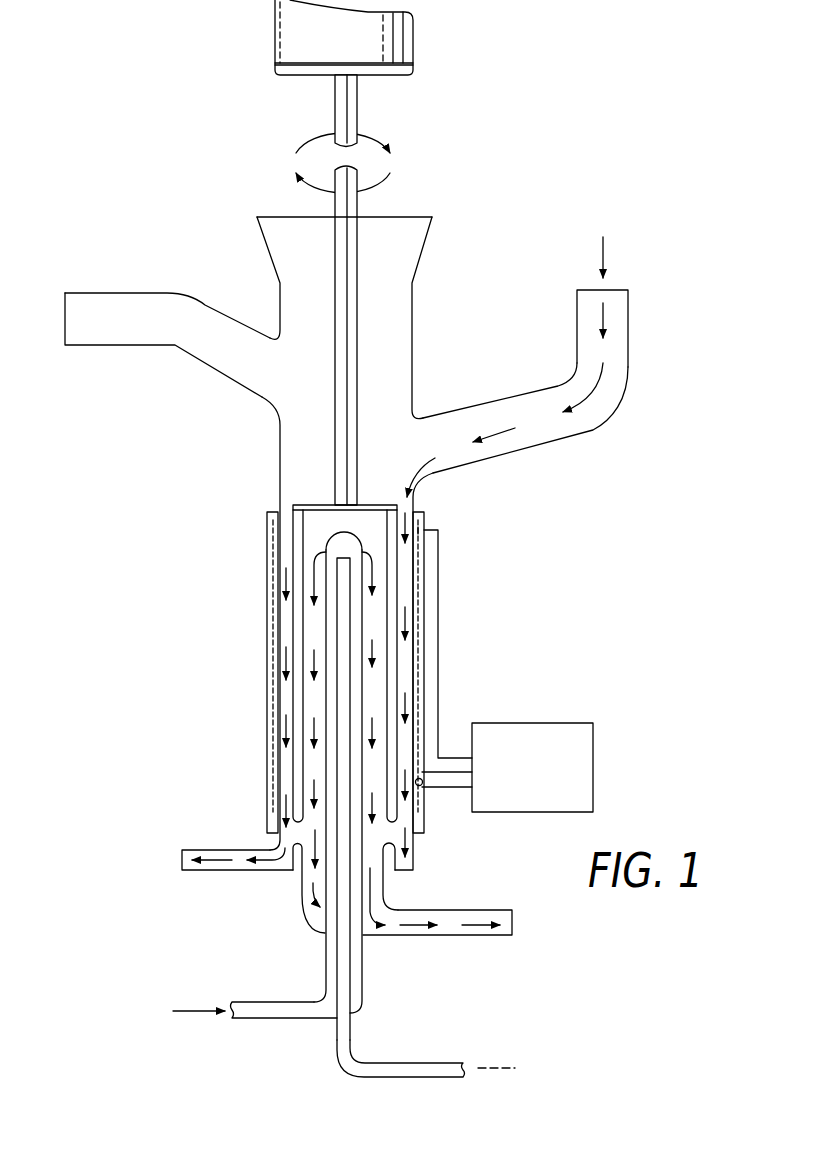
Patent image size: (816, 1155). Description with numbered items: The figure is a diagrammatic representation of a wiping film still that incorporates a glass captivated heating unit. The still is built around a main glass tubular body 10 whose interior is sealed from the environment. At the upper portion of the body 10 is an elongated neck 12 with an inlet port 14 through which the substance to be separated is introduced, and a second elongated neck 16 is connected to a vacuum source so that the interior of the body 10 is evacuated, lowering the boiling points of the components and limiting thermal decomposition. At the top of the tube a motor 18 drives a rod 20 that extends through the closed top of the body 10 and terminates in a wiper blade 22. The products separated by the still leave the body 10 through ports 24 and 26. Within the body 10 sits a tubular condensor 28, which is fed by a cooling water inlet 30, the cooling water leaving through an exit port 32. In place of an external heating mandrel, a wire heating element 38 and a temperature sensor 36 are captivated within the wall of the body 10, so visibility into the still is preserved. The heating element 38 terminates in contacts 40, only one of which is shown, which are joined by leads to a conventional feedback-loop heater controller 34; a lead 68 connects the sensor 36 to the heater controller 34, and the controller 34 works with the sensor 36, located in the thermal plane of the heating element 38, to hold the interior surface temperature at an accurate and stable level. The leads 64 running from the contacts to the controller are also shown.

The main glass tubular body 10 is at (278, 468).
The elongated neck 12 is at (613, 390).
The inlet port 14 is at (617, 288).
The elongated neck 16 is at (128, 304).
The motor 18 is at (413, 45).
The rod 20 is at (360, 290).
The wiper blade 22 is at (393, 588).
The port 24 is at (230, 814).
The port 26 is at (490, 890).
The tubular condensor 28 is at (325, 690).
The cooling water inlet 30 is at (270, 980).
The exit port 32 is at (455, 1037).
The heater controller 34 is at (575, 697).
The temperature sensor 36 is at (421, 521).
The wire heating element 38 is at (272, 636).
The contacts 40 is at (424, 778).
The sensor leads 64 is at (462, 790).
The lead 68 is at (437, 612).